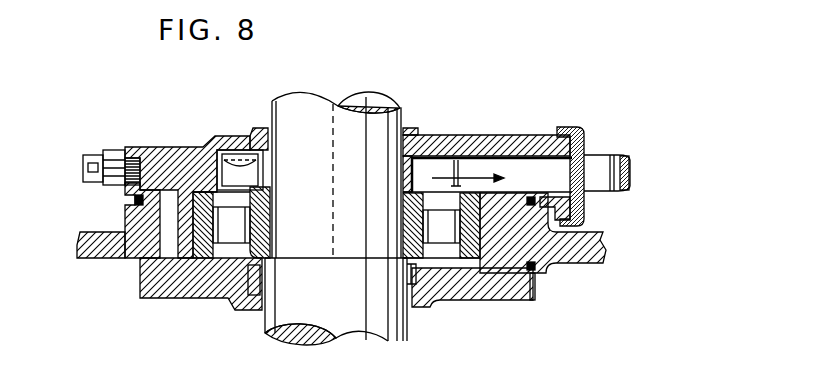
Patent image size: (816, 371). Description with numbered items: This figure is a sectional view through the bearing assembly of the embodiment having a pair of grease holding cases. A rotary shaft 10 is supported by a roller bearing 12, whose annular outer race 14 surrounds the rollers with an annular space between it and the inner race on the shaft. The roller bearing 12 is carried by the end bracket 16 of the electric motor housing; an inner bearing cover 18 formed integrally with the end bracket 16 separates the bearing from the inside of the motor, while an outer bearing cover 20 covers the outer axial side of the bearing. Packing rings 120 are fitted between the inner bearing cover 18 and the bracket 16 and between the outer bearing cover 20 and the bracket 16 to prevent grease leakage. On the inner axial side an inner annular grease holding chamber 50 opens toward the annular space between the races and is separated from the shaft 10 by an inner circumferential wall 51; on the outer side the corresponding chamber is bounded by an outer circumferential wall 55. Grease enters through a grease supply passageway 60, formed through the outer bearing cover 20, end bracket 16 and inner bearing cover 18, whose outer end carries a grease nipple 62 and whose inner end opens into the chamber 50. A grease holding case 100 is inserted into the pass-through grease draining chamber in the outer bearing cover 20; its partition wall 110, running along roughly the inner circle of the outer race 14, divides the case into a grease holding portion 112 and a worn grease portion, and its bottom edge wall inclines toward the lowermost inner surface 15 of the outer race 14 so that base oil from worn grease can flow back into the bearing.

The rotary shaft 10 is at (270, 116).
The roller bearing 12 is at (262, 216).
The annular outer race 14 is at (203, 262).
The inner surface of the outer race 15 is at (462, 232).
The end bracket 16 is at (570, 264).
The inner bearing cover 18 is at (481, 302).
The outer bearing cover 20 is at (502, 134).
The inner annular grease holding chamber 50 is at (268, 282).
The inner circumferential wall 51 is at (406, 278).
The outer circumferential wall 55 is at (218, 152).
The grease supply passageway 60 is at (170, 234).
The grease nipple 62 is at (98, 156).
The grease holding case 100 is at (528, 170).
The partition wall 110 is at (478, 157).
The grease holding portion 112 is at (433, 170).
The packing rings 120 is at (133, 198).